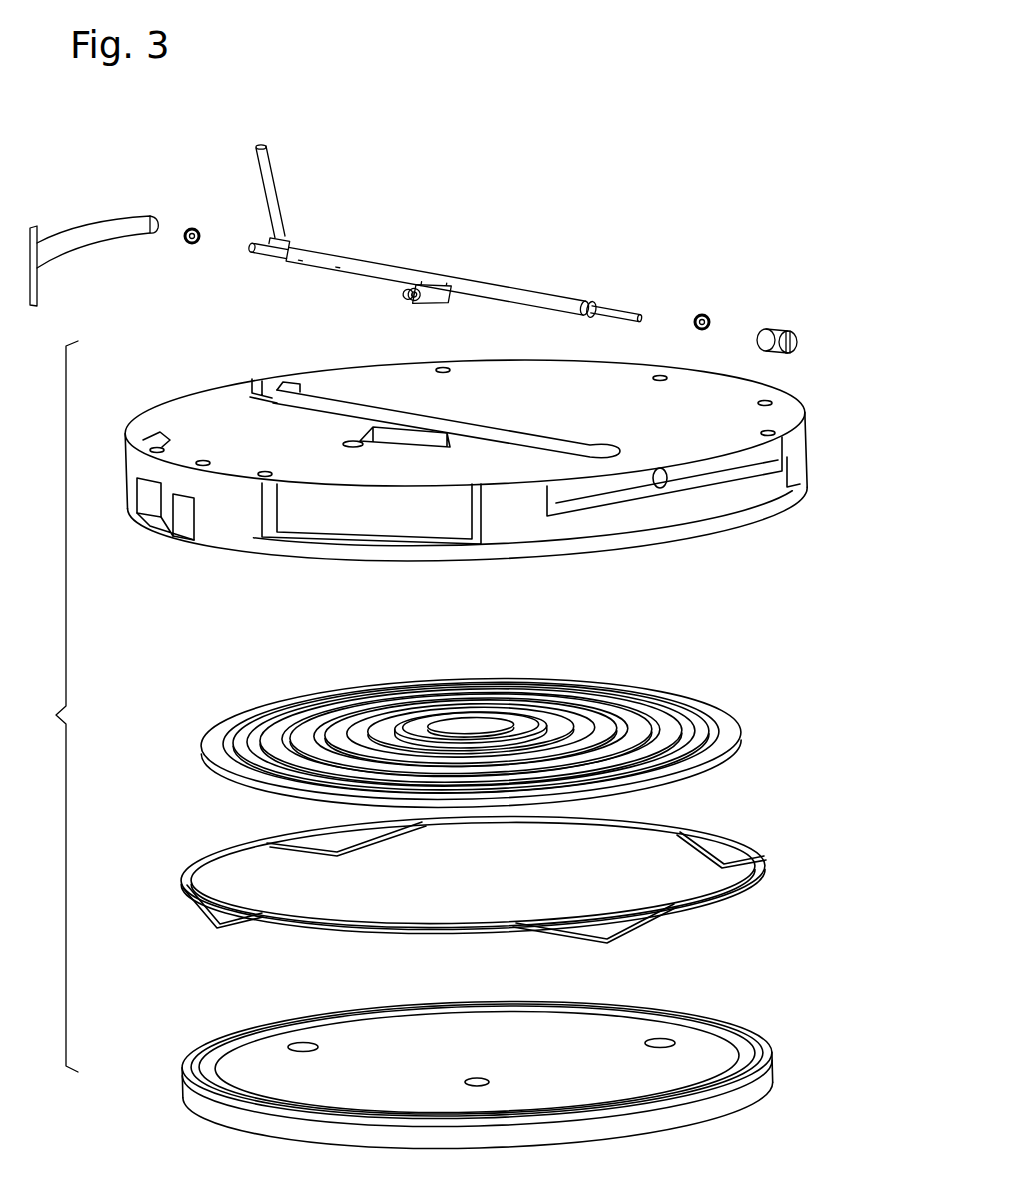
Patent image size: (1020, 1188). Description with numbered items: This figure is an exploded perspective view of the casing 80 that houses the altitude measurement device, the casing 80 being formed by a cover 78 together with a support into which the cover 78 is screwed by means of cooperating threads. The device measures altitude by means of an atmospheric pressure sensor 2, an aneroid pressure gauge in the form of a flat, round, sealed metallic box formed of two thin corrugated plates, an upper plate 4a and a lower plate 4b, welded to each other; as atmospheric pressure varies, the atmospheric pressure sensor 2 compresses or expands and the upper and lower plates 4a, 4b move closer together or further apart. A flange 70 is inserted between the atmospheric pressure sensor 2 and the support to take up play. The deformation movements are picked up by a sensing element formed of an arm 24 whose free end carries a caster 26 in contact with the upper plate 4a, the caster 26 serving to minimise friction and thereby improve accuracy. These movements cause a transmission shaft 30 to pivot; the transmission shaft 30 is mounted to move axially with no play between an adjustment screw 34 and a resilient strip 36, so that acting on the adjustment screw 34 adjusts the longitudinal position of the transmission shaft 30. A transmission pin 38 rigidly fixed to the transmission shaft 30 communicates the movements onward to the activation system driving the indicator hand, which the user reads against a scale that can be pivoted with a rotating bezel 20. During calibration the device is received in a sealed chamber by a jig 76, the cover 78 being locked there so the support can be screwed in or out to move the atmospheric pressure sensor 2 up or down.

The atmospheric pressure sensor 2 is at (494, 717).
The upper plate 4a is at (685, 706).
The lower plate 4b is at (668, 783).
The rotating bezel 20 is at (446, 280).
The arm 24 is at (437, 282).
The caster 26 is at (415, 302).
The transmission shaft 30 is at (565, 300).
The adjustment screw 34 is at (770, 336).
The resilient strip 36 is at (75, 240).
The transmission pin 38 is at (273, 176).
The flange 70 is at (772, 810).
The jig 76 is at (742, 998).
The cover 78 is at (812, 422).
The casing 80 is at (57, 706).